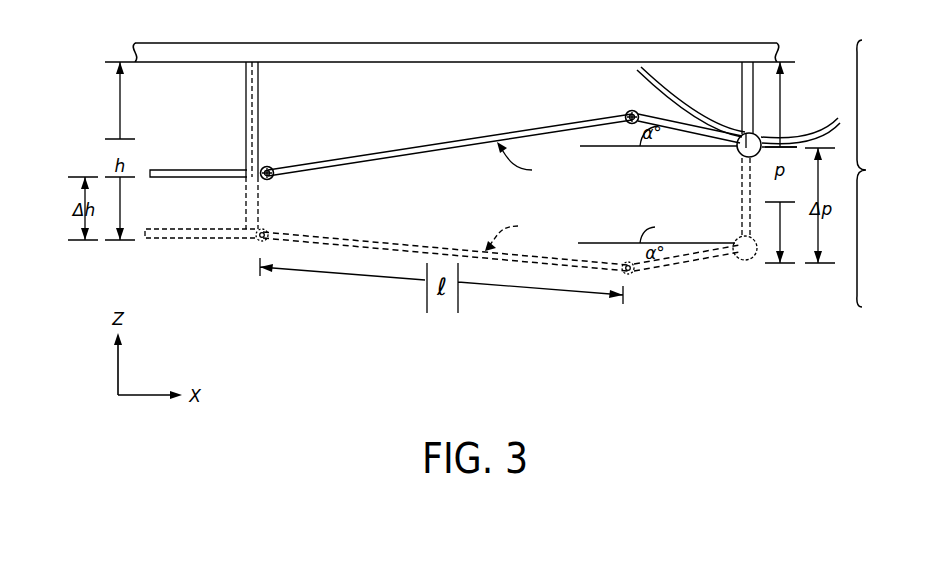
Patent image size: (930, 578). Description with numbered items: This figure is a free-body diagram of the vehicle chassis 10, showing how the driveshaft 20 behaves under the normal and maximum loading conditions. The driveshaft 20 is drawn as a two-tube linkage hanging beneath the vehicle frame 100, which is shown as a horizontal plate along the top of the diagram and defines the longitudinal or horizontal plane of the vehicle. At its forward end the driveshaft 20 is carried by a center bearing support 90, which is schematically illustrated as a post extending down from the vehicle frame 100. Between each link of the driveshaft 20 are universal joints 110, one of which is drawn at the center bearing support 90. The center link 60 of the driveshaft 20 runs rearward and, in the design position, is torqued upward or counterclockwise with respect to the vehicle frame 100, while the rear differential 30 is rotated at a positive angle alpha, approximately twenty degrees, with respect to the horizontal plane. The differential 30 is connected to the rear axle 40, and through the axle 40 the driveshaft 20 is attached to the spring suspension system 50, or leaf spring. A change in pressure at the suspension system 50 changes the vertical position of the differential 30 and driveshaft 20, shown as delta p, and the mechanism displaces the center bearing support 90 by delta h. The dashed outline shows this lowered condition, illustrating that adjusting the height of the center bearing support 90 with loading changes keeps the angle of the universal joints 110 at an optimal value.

The vehicle chassis 10 is at (874, 173).
The driveshaft 20 is at (345, 157).
The differential 30 is at (660, 116).
The rear axle 40 is at (736, 129).
The spring suspension system 50 is at (807, 128).
The center link 60 is at (520, 196).
The center bearing support 90 is at (260, 82).
The vehicle frame 100 is at (533, 43).
The universal joints 110 is at (268, 167).